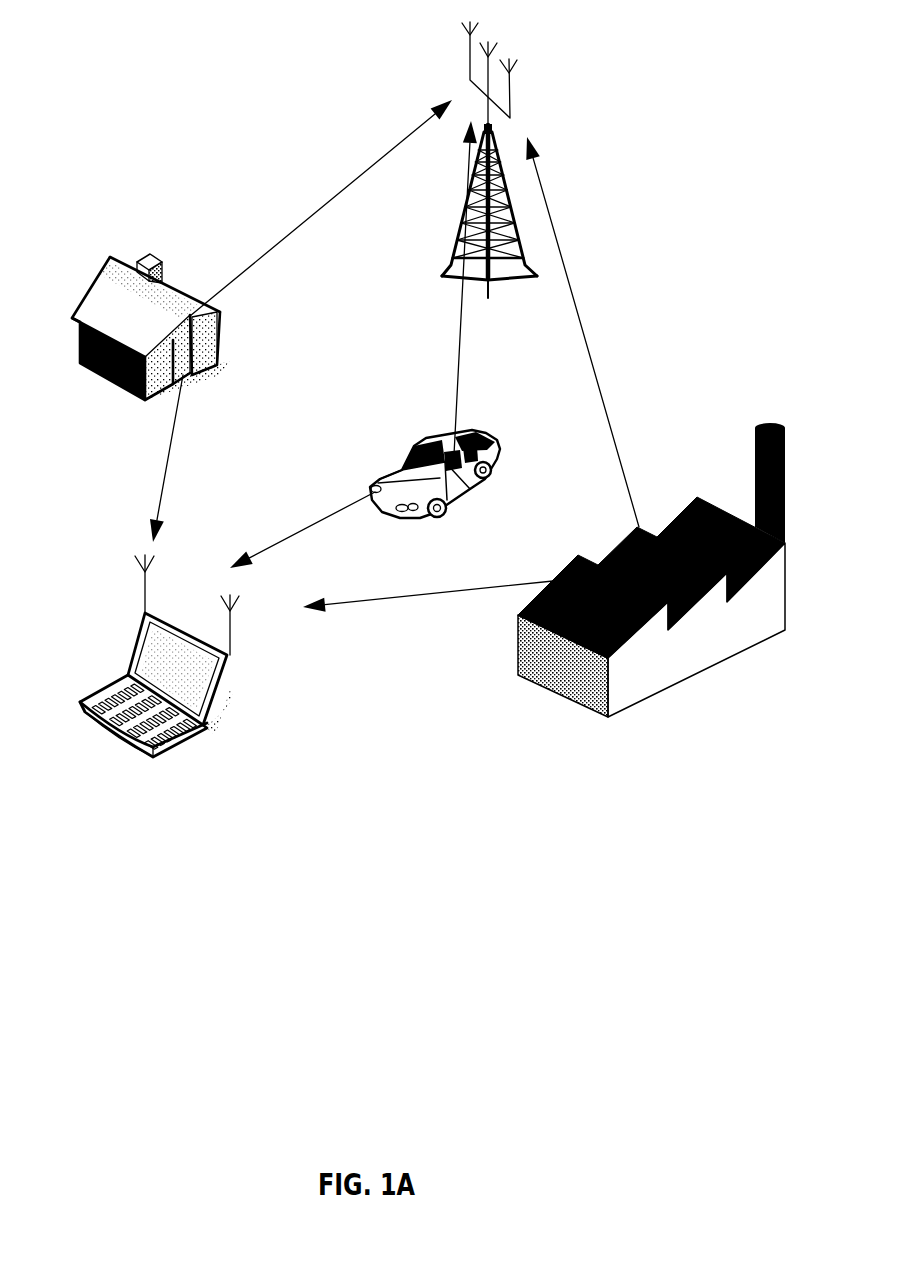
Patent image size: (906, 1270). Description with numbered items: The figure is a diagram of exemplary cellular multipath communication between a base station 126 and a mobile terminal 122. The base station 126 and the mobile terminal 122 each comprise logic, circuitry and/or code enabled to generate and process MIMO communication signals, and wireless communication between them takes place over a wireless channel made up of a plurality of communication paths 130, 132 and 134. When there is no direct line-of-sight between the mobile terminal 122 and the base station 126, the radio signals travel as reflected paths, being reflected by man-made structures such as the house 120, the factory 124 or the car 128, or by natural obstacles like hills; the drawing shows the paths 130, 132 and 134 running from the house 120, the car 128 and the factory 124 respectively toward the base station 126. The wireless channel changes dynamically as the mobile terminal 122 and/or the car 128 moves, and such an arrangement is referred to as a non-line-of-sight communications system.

The house 120 is at (112, 255).
The mobile terminal 122 is at (225, 677).
The factory 124 is at (623, 708).
The base station 126 is at (488, 298).
The car 128 is at (438, 515).
The communication path 130 is at (270, 252).
The communication path 132 is at (457, 385).
The communication path 134 is at (592, 362).